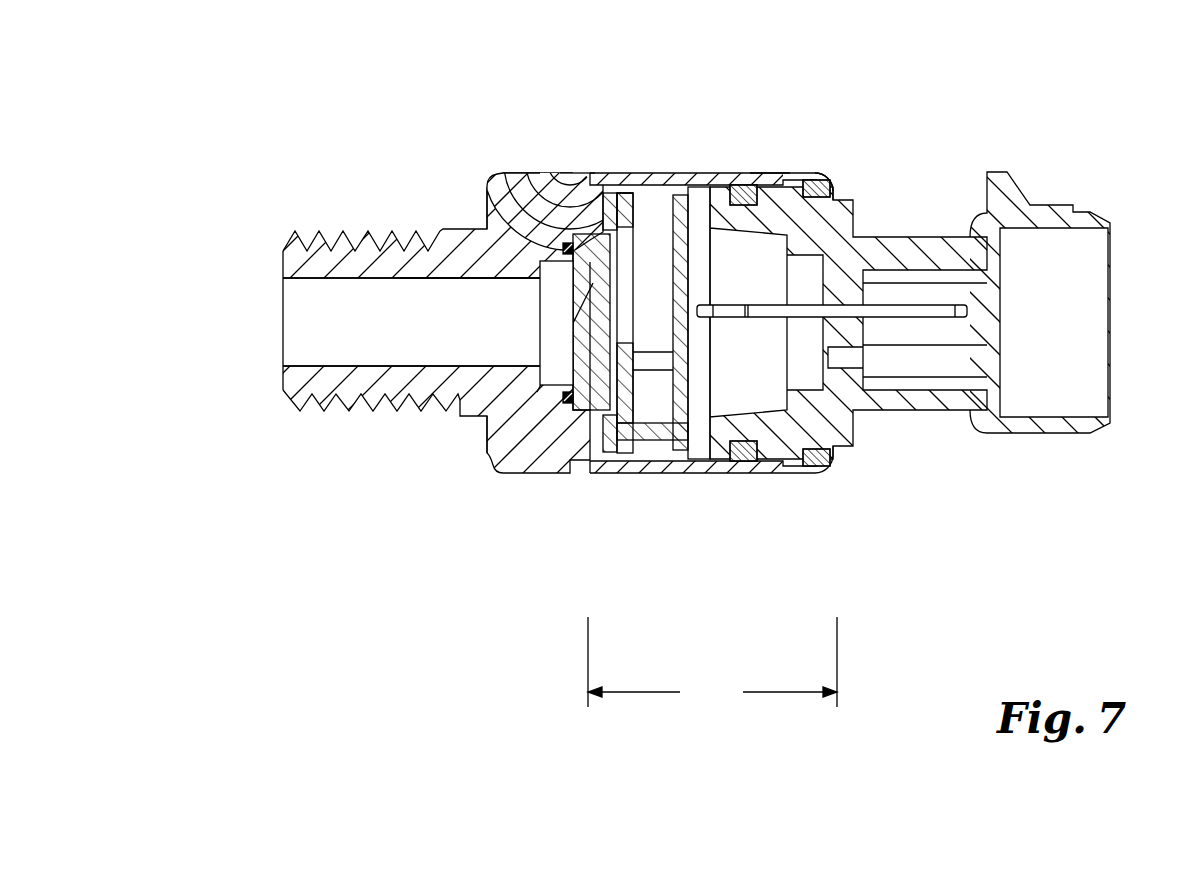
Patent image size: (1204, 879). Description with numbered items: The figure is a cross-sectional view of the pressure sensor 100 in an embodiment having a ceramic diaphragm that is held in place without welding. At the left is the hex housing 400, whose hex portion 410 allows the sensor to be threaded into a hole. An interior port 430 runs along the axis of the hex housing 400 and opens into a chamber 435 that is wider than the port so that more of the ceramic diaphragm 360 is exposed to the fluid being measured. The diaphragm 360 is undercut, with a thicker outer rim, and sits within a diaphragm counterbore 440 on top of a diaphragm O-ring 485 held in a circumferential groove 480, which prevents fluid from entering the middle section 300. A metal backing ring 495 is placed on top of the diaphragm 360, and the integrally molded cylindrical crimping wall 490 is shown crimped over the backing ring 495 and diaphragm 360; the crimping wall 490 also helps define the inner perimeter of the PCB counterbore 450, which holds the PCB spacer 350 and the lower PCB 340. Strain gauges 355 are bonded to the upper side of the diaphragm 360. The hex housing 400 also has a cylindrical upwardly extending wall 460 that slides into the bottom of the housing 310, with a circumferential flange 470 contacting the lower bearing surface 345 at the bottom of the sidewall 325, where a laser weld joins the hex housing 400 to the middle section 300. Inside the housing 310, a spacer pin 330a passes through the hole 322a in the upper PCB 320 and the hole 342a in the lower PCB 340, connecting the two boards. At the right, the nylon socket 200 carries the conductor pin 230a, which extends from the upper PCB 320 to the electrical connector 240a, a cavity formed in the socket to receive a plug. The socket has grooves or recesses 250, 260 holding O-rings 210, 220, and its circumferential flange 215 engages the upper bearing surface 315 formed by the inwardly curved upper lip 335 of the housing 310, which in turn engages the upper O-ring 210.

The pressure sensor 100 is at (1203, 332).
The nylon socket 200 is at (1018, 424).
The upper O-ring 210 is at (827, 472).
The circumferential flange 215 is at (802, 177).
The O-ring 220 is at (747, 462).
The conductor pin 230a is at (890, 313).
The electrical connector 240a is at (934, 288).
The groove 250 is at (807, 182).
The recess 260 is at (770, 173).
The middle section 300 is at (712, 662).
The housing 310 is at (723, 467).
The upper bearing surface 315 is at (792, 173).
The upper PCB 320 is at (687, 450).
The hole 322a is at (710, 457).
The sidewall 325 is at (738, 467).
The spacer pin 330a is at (637, 440).
The inwardly curved upper lip 335 is at (836, 189).
The lower PCB 340 is at (603, 440).
The hole 342a is at (627, 440).
The lower bearing surface 345 is at (602, 173).
The PCB spacer 350 is at (590, 461).
The strain gauges 355 is at (565, 268).
The ceramic diaphragm 360 is at (487, 436).
The hex housing 400 is at (468, 258).
The hex portion 410 is at (343, 402).
The interior port 430 is at (307, 332).
The chamber 435 is at (556, 291).
The diaphragm counterbore 440 is at (523, 173).
The PCB counterbore 450 is at (572, 173).
The upwardly extending wall 460 is at (613, 173).
The circumferential flange 470 is at (587, 173).
The circumferential groove 480 is at (500, 215).
The diaphragm O-ring 485 is at (498, 176).
The cylindrical crimping wall 490 is at (653, 173).
The metal backing ring 495 is at (548, 173).